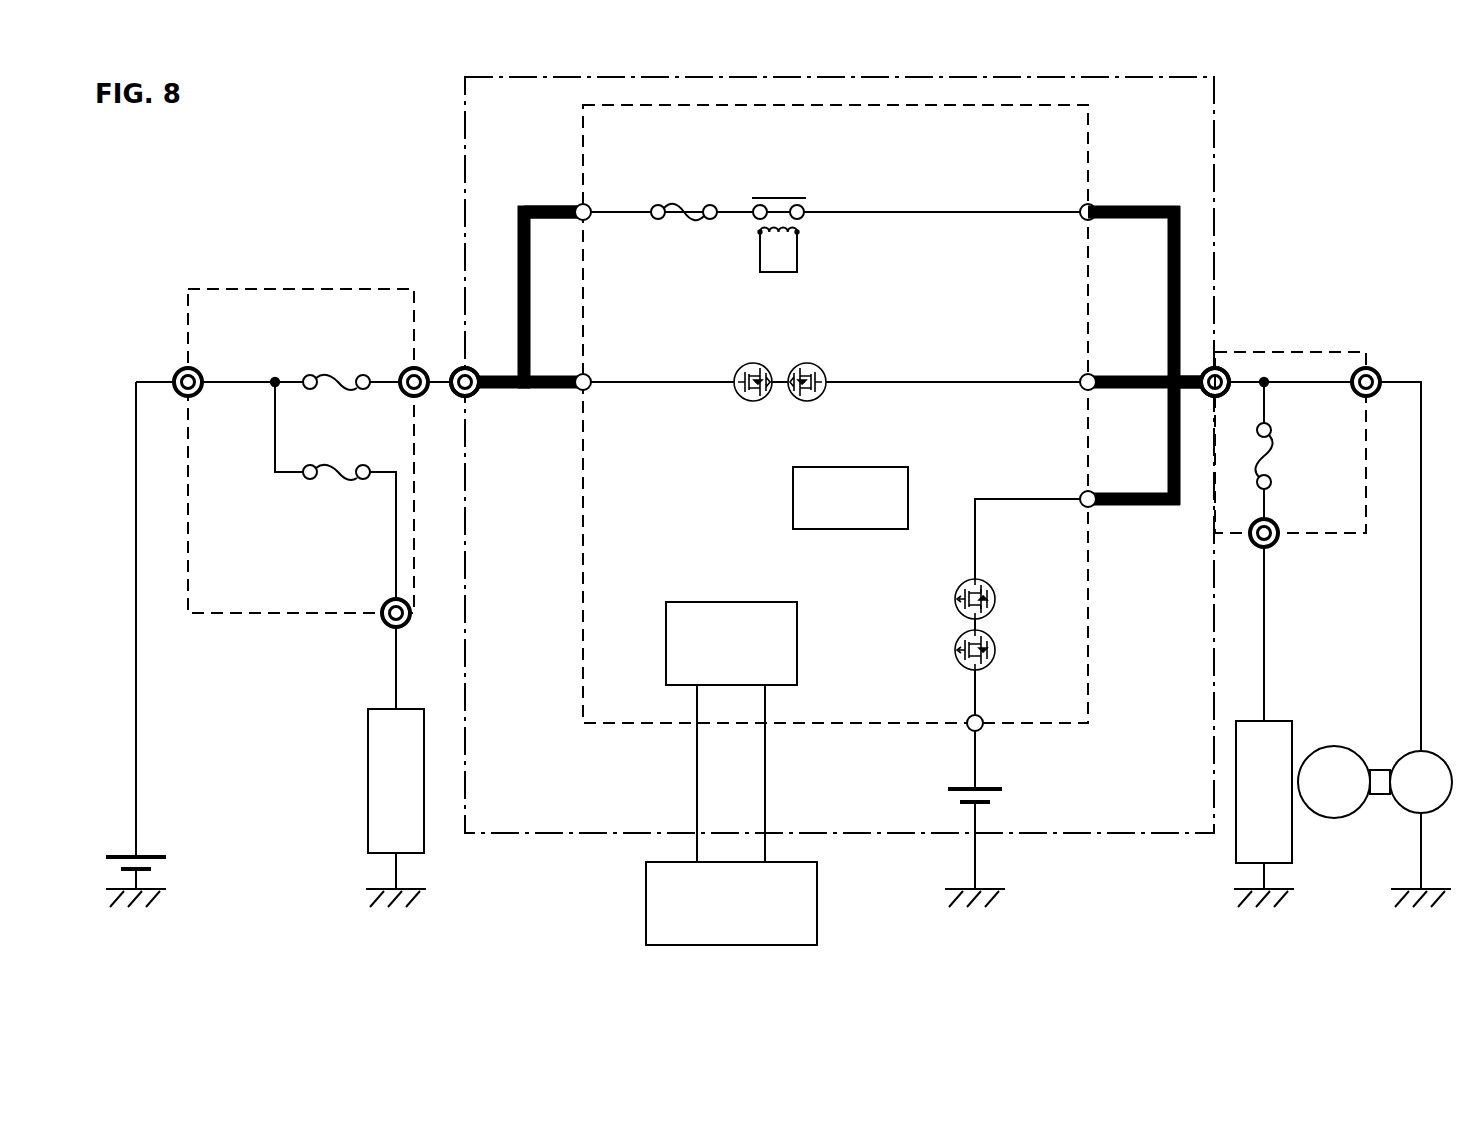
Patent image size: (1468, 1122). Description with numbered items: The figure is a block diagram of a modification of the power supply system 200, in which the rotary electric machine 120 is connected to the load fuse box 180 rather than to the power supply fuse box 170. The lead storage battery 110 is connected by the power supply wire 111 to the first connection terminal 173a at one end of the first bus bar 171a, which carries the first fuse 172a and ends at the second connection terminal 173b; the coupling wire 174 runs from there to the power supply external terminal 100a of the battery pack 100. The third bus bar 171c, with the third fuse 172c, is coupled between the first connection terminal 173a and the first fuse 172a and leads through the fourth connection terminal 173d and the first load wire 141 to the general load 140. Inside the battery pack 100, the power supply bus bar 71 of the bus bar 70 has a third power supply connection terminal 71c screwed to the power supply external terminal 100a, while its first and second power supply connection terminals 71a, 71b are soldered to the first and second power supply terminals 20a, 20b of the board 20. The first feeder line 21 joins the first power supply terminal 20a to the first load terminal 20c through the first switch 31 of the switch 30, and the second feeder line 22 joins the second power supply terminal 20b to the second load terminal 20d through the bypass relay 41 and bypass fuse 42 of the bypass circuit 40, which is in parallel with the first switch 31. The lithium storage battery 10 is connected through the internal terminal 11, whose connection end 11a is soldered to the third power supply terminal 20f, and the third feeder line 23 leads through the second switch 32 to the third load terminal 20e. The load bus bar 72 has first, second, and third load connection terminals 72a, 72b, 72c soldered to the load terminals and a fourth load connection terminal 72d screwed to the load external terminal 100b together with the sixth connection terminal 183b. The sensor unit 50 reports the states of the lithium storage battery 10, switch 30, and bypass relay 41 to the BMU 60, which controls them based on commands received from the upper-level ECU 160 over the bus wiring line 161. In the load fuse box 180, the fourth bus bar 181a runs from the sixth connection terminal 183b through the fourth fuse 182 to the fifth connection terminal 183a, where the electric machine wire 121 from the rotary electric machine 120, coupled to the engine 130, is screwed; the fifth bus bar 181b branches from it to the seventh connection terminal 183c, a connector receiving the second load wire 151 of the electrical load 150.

The power supply system 200 is at (1305, 85).
The battery pack 100 is at (1218, 213).
The power supply external terminal 100a is at (475, 396).
The load external terminal 100b is at (1220, 368).
The board 20 is at (1091, 143).
The first power supply terminal 20a is at (591, 376).
The second power supply terminal 20b is at (591, 206).
The first load terminal 20c is at (1080, 378).
The second load terminal 20d is at (1080, 208).
The third load terminal 20e is at (1080, 495).
The third power supply terminal 20f is at (985, 716).
The first feeder line 21 is at (937, 380).
The second feeder line 22 is at (947, 210).
The third feeder line 23 is at (973, 551).
The switch 30 is at (885, 332).
The first switch 31 is at (806, 363).
The second switch 32 is at (995, 596).
The bypass circuit 40 is at (834, 193).
The bypass relay 41 is at (777, 198).
The bypass fuse 42 is at (696, 210).
The sensor unit 50 is at (812, 466).
The BMU 60 is at (688, 602).
The bus bar 70 is at (1176, 193).
The power supply bus bar 71 is at (517, 266).
The first power supply connection terminal 71a is at (558, 376).
The second power supply connection terminal 71b is at (550, 206).
The third power supply connection terminal 71c is at (498, 376).
The load bus bar 72 is at (1167, 304).
The first load connection terminal 72a is at (1125, 376).
The second load connection terminal 72b is at (1125, 206).
The third load connection terminal 72c is at (1125, 493).
The fourth load connection terminal 72d is at (1185, 335).
The lithium storage battery 10 is at (1004, 790).
The internal terminal 11 is at (980, 755).
The connection end 11a is at (970, 735).
The lead storage battery 110 is at (118, 854).
The power supply wire 111 is at (135, 500).
The rotary electric machine 120 is at (1400, 810).
The electric machine wire 121 is at (1418, 666).
The engine 130 is at (1336, 746).
The general load 140 is at (366, 778).
The first load wire 141 is at (393, 678).
The electrical load 150 is at (1246, 720).
The second load wire 151 is at (1266, 650).
The upper-level ECU 160 is at (818, 899).
The bus wiring line 161 is at (767, 797).
The power supply fuse box 170 is at (285, 289).
The first bus bar 171a is at (244, 380).
The third bus bar 171c is at (388, 549).
The first fuse 172a is at (326, 372).
The third fuse 172c is at (326, 466).
The first connection terminal 173a is at (175, 375).
The second connection terminal 173b is at (403, 375).
The fourth connection terminal 173d is at (381, 606).
The coupling wire 174 is at (456, 370).
The load fuse box 180 is at (1340, 352).
The fourth bus bar 181a is at (1292, 392).
The fifth bus bar 181b is at (1272, 503).
The fourth fuse 182 is at (1280, 452).
The fifth connection terminal 183a is at (1372, 368).
The sixth connection terminal 183b is at (1207, 398).
The seventh connection terminal 183c is at (1273, 548).